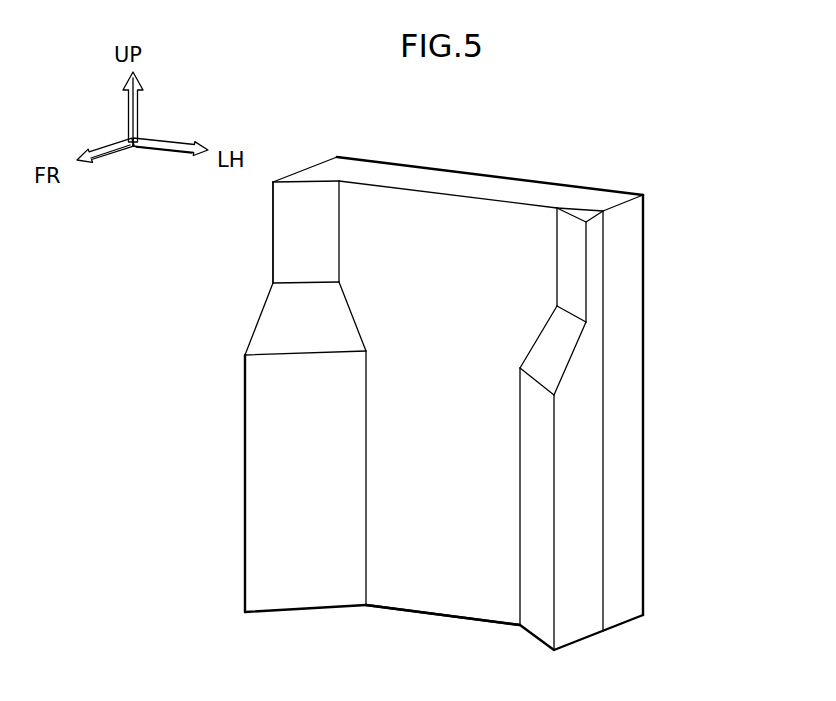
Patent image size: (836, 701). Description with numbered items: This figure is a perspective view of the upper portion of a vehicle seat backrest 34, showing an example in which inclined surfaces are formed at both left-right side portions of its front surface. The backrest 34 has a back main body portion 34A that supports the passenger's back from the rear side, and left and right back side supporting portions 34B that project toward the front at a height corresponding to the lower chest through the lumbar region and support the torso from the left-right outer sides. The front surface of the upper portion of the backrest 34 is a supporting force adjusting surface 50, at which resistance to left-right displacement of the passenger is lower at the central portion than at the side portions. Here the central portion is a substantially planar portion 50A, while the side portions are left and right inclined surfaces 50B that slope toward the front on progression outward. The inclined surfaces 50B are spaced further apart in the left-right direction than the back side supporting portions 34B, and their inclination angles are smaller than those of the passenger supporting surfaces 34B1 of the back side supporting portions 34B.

The backrest 34 is at (668, 320).
The back main body portion 34A is at (429, 505).
The back side supporting portions 34B is at (245, 458).
The passenger supporting surfaces 34B1 is at (278, 525).
The supporting force adjusting surface 50 is at (408, 212).
The planar portion 50A is at (490, 237).
The inclined surfaces 50B is at (300, 235).